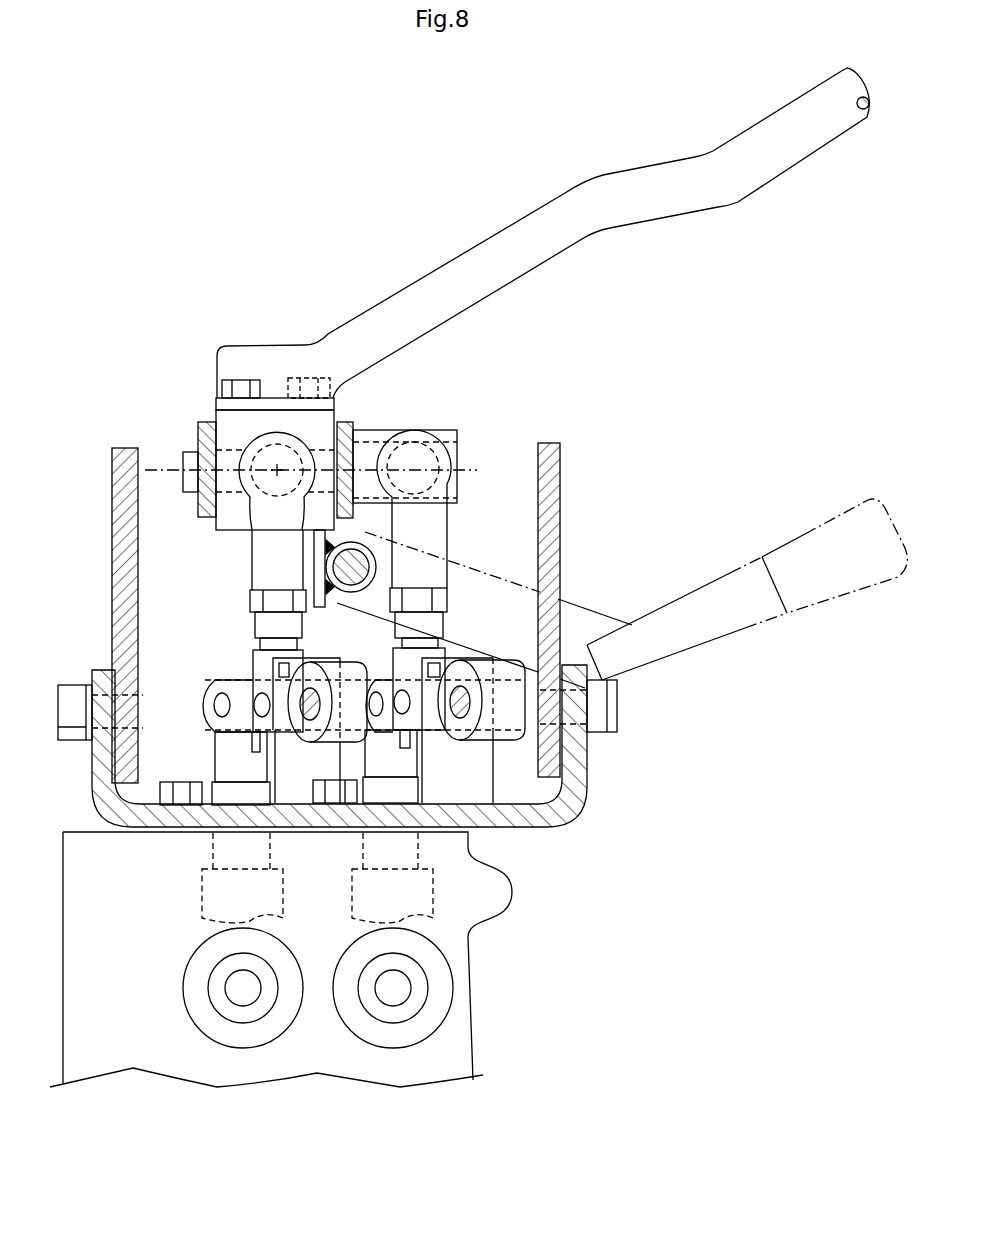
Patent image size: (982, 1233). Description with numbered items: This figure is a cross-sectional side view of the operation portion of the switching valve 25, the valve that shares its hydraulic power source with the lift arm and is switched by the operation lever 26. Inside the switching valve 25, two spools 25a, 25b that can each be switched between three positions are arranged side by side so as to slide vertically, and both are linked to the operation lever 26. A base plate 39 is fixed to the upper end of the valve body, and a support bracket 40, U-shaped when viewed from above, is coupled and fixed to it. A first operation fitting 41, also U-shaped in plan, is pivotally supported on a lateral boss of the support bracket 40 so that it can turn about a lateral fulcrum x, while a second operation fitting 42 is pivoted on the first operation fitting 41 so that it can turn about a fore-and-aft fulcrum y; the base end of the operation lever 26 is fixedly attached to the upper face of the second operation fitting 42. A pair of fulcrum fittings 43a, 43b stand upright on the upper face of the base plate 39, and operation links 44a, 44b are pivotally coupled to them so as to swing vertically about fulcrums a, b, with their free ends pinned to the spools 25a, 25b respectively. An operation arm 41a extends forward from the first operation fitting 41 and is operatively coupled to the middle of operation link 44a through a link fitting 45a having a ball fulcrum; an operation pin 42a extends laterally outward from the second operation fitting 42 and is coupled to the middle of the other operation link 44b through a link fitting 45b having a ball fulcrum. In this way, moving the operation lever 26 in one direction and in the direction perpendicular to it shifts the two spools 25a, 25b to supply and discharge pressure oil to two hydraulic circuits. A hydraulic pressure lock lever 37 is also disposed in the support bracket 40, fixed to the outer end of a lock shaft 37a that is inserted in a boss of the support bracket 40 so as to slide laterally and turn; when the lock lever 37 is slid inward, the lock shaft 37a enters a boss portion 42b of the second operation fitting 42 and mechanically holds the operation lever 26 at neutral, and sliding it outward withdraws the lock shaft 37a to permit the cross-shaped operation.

The switching valve 25 is at (478, 995).
The spool 25a is at (433, 889).
The spool 25b is at (202, 890).
The operation lever 26 is at (645, 177).
The hydraulic pressure lock lever 37 is at (810, 523).
The lock shaft 37a is at (337, 568).
The base plate 39 is at (587, 762).
The support bracket 40 is at (560, 457).
The first operation fitting 41 is at (352, 420).
The operation arm 41a is at (453, 430).
The second operation fitting 42 is at (216, 412).
The operation pin 42a is at (280, 410).
The boss portion 42b is at (413, 592).
The fulcrum fitting 43a is at (493, 772).
The fulcrum fitting 43b is at (272, 764).
The operation link 44a is at (378, 676).
The operation link 44b is at (205, 705).
The link fitting 45a is at (443, 532).
The link fitting 45b is at (258, 577).
The fulcrum a is at (460, 704).
The fulcrum b is at (310, 704).
The lateral fulcrum x is at (277, 470).
The fore-and-aft fulcrum y is at (155, 470).